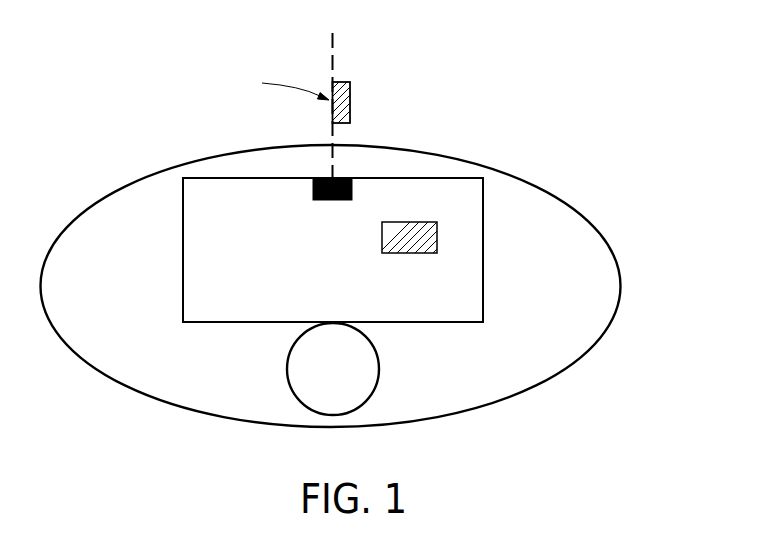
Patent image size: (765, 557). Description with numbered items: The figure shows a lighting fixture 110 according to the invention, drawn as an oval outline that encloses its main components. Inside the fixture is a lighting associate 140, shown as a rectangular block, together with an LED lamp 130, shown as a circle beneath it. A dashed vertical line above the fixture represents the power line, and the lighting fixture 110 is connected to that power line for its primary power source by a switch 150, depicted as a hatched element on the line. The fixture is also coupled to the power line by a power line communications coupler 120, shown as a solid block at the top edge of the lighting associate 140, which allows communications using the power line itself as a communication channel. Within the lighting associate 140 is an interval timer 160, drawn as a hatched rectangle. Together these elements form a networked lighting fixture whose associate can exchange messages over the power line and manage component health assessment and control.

The lighting fixture 110 is at (621, 286).
The power line communications coupler 120 is at (352, 190).
The LED lamp 130 is at (379, 378).
The lighting associate 140 is at (483, 295).
The switch 150 is at (352, 92).
The interval timer 160 is at (381, 237).